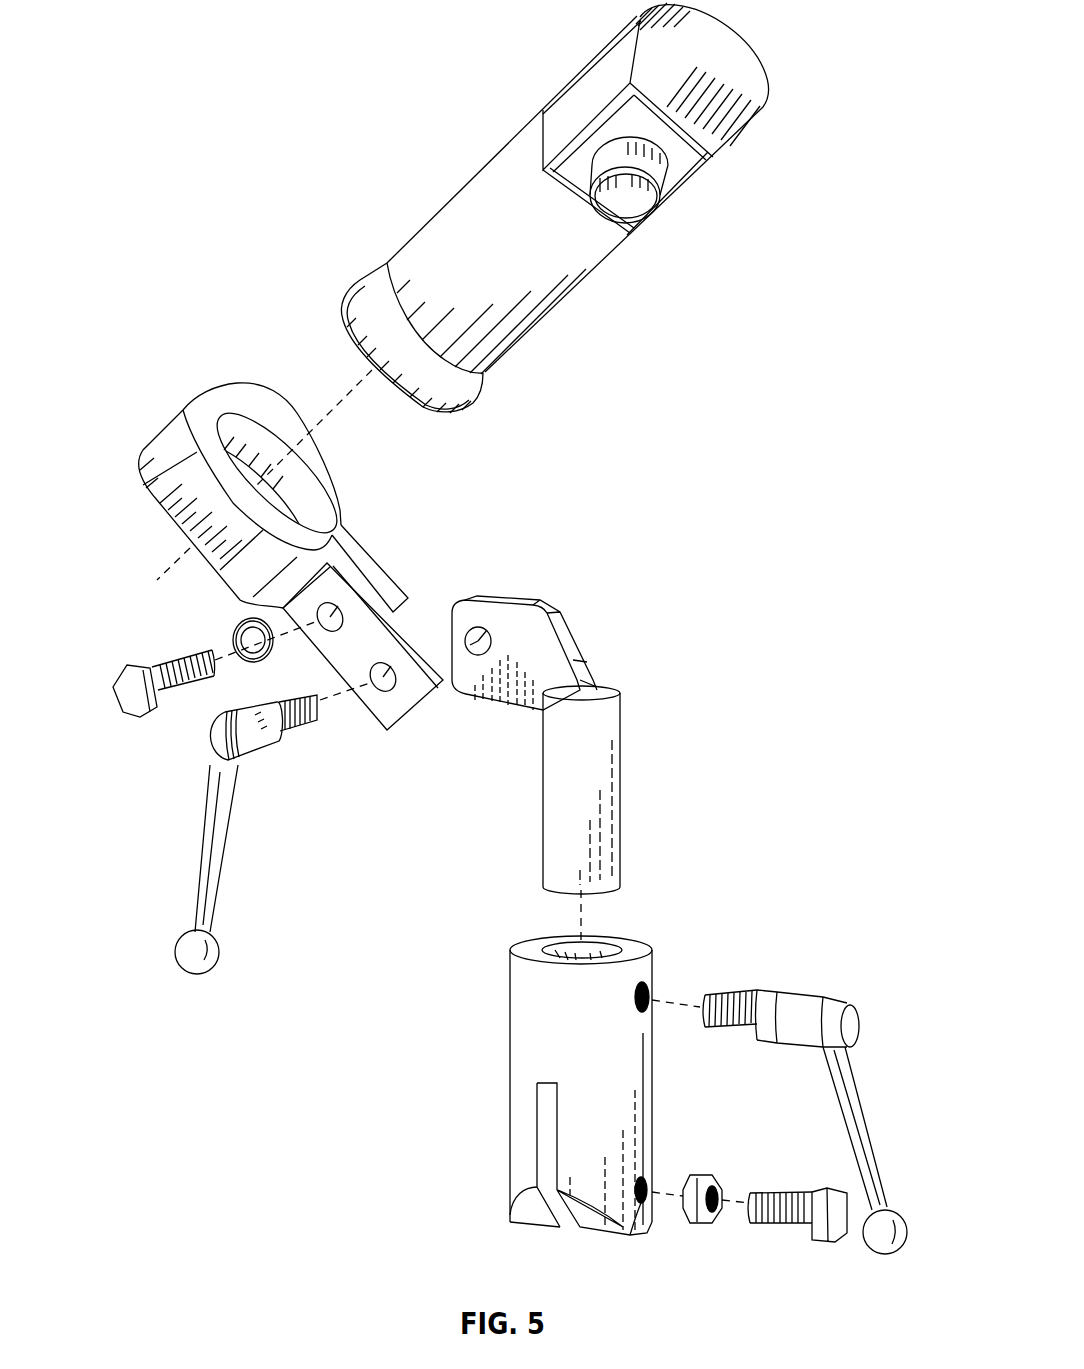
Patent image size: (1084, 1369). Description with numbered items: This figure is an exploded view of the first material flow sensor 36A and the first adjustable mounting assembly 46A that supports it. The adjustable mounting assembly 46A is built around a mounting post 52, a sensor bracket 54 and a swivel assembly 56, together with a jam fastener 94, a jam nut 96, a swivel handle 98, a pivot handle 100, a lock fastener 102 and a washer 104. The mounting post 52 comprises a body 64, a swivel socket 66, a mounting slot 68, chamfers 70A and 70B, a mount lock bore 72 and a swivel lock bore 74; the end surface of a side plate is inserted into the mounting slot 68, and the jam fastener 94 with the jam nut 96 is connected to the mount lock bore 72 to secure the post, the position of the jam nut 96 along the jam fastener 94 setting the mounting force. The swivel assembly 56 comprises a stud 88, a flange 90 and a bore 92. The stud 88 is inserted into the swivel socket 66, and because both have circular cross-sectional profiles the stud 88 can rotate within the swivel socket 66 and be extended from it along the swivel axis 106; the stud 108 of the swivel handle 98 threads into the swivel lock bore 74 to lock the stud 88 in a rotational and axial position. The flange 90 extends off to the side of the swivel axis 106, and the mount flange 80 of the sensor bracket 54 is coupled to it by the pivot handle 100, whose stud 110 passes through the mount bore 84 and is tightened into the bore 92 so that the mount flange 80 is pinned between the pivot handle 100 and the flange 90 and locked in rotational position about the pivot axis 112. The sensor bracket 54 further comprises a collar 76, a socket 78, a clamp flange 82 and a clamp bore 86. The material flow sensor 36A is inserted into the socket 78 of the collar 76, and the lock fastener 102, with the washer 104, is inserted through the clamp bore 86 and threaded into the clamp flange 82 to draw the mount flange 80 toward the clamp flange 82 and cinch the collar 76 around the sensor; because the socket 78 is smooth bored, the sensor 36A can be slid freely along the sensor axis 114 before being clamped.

The first material flow sensor 36A is at (510, 145).
The first adjustable mounting assembly 46A is at (679, 627).
The mounting post 52 is at (593, 1094).
The sensor bracket 54 is at (272, 480).
The swivel assembly 56 is at (565, 745).
The body 64 is at (590, 1094).
The swivel socket 66 is at (600, 944).
The mounting slot 68 is at (545, 1123).
The chamfer 70A is at (530, 1222).
The chamfer 70B is at (652, 1225).
The mount lock bore 72 is at (628, 1228).
The swivel lock bore 74 is at (650, 990).
The collar 76 is at (152, 456).
The socket 78 is at (305, 487).
The mount flange 80 is at (363, 669).
The clamp flange 82 is at (373, 567).
The mount bore 84 is at (380, 693).
The clamp bore 86 is at (334, 628).
The stud 88 is at (543, 797).
The flange 90 is at (516, 677).
The bore 92 is at (478, 656).
The jam fastener 94 is at (786, 1197).
The jam nut 96 is at (700, 1172).
The swivel handle 98 is at (808, 1000).
The pivot handle 100 is at (203, 838).
The lock fastener 102 is at (177, 660).
The washer 104 is at (263, 664).
The swivel axis 106 is at (580, 897).
The stud 108 is at (745, 992).
The stud 110 is at (293, 735).
The pivot axis 112 is at (443, 657).
The sensor axis 114 is at (170, 567).